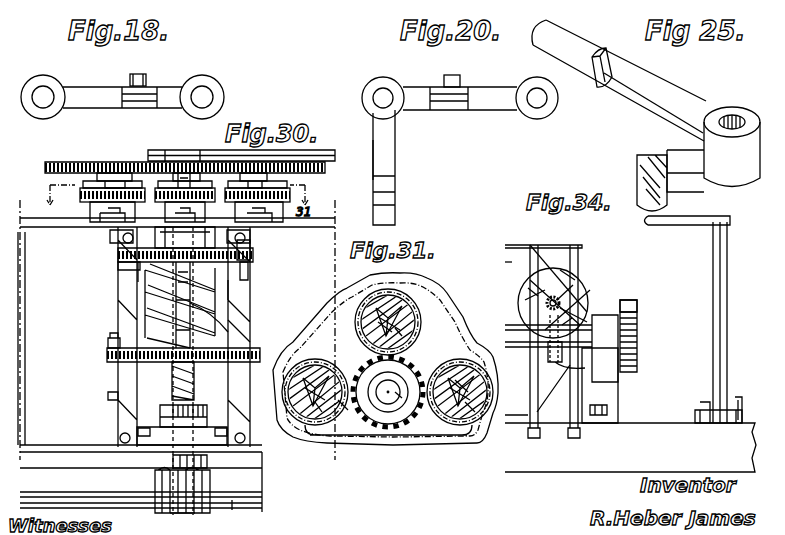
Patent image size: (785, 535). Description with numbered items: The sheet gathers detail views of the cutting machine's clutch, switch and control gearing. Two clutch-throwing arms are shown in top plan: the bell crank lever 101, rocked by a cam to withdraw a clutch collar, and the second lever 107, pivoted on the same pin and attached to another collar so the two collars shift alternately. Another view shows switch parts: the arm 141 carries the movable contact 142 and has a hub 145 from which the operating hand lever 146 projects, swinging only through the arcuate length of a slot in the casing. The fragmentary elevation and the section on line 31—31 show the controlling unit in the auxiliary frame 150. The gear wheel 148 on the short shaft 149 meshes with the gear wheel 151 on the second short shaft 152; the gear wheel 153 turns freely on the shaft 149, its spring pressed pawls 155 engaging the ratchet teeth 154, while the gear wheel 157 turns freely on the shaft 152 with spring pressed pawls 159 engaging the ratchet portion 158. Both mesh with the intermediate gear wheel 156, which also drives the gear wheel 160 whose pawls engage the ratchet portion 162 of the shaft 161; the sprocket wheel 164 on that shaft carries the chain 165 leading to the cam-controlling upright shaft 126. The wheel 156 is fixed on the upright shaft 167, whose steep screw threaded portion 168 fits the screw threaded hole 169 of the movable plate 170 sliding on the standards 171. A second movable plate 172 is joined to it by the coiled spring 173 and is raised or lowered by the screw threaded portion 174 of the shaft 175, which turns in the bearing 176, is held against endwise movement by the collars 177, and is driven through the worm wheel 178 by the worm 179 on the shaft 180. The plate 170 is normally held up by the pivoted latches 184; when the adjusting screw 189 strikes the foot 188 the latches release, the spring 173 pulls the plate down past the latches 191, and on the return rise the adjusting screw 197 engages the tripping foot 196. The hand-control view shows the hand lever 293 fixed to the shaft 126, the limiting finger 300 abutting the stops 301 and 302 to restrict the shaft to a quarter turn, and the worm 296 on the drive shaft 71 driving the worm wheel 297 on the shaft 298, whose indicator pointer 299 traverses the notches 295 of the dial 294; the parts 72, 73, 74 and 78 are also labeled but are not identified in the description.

In FIG. 18, the second lever 107 is at (158, 88).
In FIG. 20, the bell crank lever 101 is at (470, 88).
In FIG. 20, the chain 165 is at (372, 160).
In FIG. 31, the chain 165 is at (378, 320).
In FIG. 25, the operating hand lever 146 is at (686, 98).
In FIG. 25, the hub 145 is at (735, 107).
In FIG. 25, the arm 141 is at (675, 152).
In FIG. 25, the contact 142 is at (640, 170).
In FIG. 34, the section line 31 is at (565, 470).
In FIG. 30, the section line 31 is at (57, 202).
In FIG. 34, the hand lever 293 is at (690, 226).
In FIG. 34, the cam-controlling upright shaft 126 is at (712, 260).
In FIG. 34, the drive shaft 71 is at (540, 310).
In FIG. 34, the dial 294 is at (558, 260).
In FIG. 34, the notches 295 is at (558, 296).
In FIG. 34, the indicator pointer 299 is at (573, 285).
In FIG. 34, the shaft 298 is at (580, 300).
In FIG. 34, the worm wheel 297 is at (570, 325).
In FIG. 34, the worm 296 is at (579, 360).
In FIG. 34, the gear 73 is at (639, 335).
In FIG. 34, the hub 74 is at (637, 302).
In FIG. 34, the bracket 72 is at (612, 400).
In FIG. 34, the limiting finger 300 is at (702, 402).
In FIG. 34, the stop 301 is at (696, 412).
In FIG. 34, the stop 302 is at (748, 388).
In FIG. 34, the frame 78 is at (512, 262).
In FIG. 31, the auxiliary frame 150 is at (440, 290).
In FIG. 30, the auxiliary frame 150 is at (58, 230).
In FIG. 31, the intermediate gear wheel 156 is at (394, 400).
In FIG. 30, the intermediate gear wheel 156 is at (176, 172).
In FIG. 31, the shaft 161 is at (405, 300).
In FIG. 30, the shaft 161 is at (184, 172).
In FIG. 31, the second short shaft 152 is at (320, 405).
In FIG. 30, the second short shaft 152 is at (170, 188).
In FIG. 31, the spring pressed pawls 155 is at (455, 405).
In FIG. 31, the gear wheel 160 is at (400, 322).
In FIG. 31, the ratchet portion 162 is at (400, 328).
In FIG. 31, the spring pressed pawls 159 is at (318, 372).
In FIG. 31, the gear wheel 153 is at (460, 372).
In FIG. 30, the gear wheel 153 is at (285, 192).
In FIG. 31, the short shaft 149 is at (470, 372).
In FIG. 30, the short shaft 149 is at (240, 165).
In FIG. 31, the ratchet portion 158 is at (322, 405).
In FIG. 31, the gear wheel 157 is at (340, 405).
In FIG. 30, the gear wheel 157 is at (112, 172).
In FIG. 31, the upright shaft 167 is at (400, 400).
In FIG. 30, the upright shaft 167 is at (118, 255).
In FIG. 31, the ratchet teeth 154 is at (465, 405).
In FIG. 30, the gear wheel 148 is at (290, 161).
In FIG. 30, the sprocket wheel 164 is at (190, 150).
In FIG. 30, the gear wheel 151 is at (92, 188).
In FIG. 30, the standards 171 is at (118, 310).
In FIG. 30, the screw threaded hole 169 is at (120, 266).
In FIG. 30, the pivoted latches 184 is at (138, 274).
In FIG. 30, the adjusting screw 189 is at (107, 345).
In FIG. 30, the second movable plate 172 is at (107, 356).
In FIG. 30, the coiled spring 173 is at (215, 312).
In FIG. 30, the screw threaded portion 174 is at (194, 372).
In FIG. 30, the shaft 175 is at (172, 382).
In FIG. 30, the adjusting screw 197 is at (209, 321).
In FIG. 30, the foot 188 is at (108, 395).
In FIG. 30, the collars 177 is at (170, 410).
In FIG. 30, the bearing 176 is at (137, 435).
In FIG. 30, the worm wheel 178 is at (155, 485).
In FIG. 30, the worm 179 is at (180, 513).
In FIG. 30, the shaft 180 is at (232, 510).
In FIG. 30, the movable plate 170 is at (250, 252).
In FIG. 30, the latches 191 is at (248, 270).
In FIG. 30, the steep screw threaded portion 168 is at (245, 285).
In FIG. 30, the tripping foot 196 is at (250, 332).